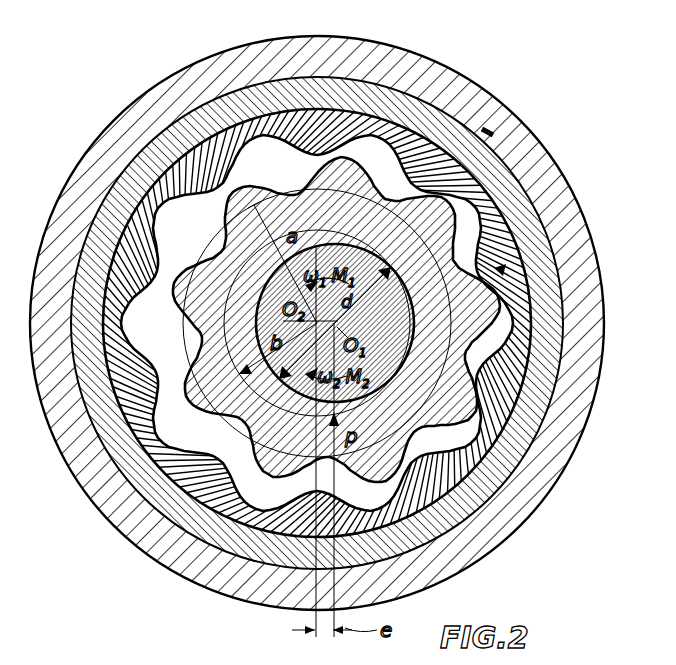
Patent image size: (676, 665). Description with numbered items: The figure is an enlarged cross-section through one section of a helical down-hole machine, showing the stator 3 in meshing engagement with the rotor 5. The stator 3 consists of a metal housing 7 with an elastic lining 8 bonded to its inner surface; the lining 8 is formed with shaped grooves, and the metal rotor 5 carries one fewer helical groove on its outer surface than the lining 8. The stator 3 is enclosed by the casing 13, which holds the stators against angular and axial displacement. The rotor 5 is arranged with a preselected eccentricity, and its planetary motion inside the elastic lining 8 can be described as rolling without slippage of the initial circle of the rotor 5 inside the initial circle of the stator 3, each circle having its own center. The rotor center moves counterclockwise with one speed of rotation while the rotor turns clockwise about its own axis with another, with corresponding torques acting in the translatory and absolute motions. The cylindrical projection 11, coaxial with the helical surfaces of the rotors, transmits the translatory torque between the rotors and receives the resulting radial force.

The stator 3 is at (489, 133).
The rotor 5 is at (533, 327).
The metal housing 7 is at (525, 199).
The elastic lining 8 is at (521, 251).
The projection 11 is at (518, 410).
The casing 13 is at (545, 478).